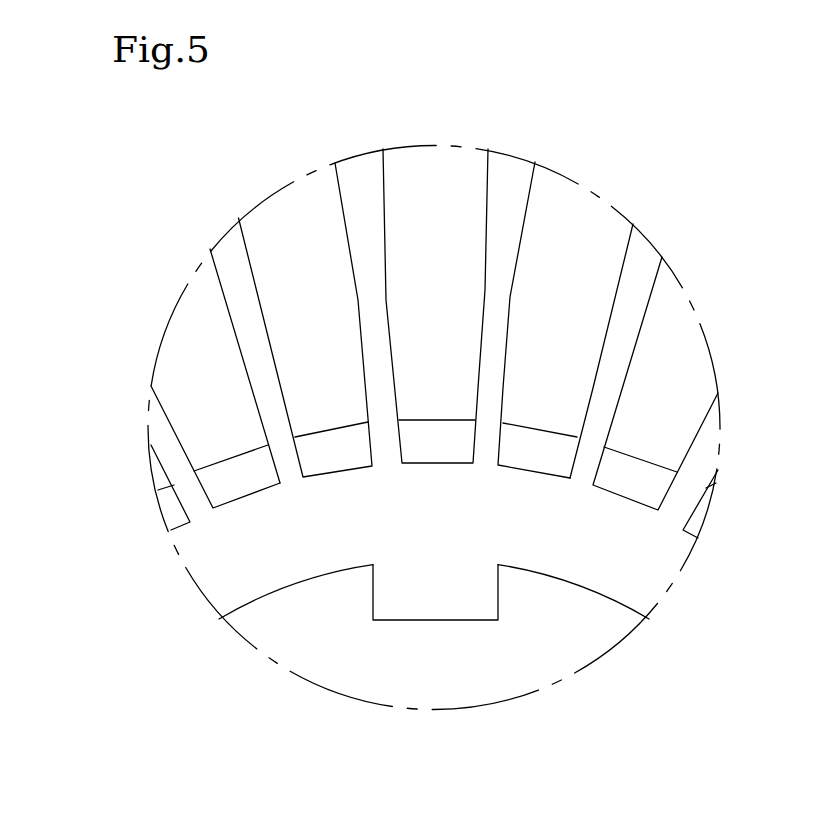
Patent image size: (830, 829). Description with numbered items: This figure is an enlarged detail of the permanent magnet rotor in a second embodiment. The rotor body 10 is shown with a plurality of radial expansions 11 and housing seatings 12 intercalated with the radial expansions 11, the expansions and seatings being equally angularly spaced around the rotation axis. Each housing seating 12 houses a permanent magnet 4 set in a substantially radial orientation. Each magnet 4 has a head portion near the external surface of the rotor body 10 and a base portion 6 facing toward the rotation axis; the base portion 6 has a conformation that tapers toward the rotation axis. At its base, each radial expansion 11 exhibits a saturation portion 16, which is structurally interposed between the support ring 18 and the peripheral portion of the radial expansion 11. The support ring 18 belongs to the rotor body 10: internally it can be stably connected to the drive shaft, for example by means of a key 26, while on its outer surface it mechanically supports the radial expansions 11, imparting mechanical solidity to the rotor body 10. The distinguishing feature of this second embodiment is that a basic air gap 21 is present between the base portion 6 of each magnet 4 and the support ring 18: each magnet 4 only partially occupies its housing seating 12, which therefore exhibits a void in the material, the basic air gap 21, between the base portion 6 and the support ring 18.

The permanent magnet 4 is at (437, 228).
The base portion 6 is at (519, 310).
The rotor body 10 is at (603, 557).
The radial expansion 11 is at (640, 273).
The housing seating 12 is at (573, 173).
The saturation portion 16 is at (432, 342).
The support ring 18 is at (241, 636).
The basic air gap 21 is at (437, 599).
The key 26 is at (435, 675).